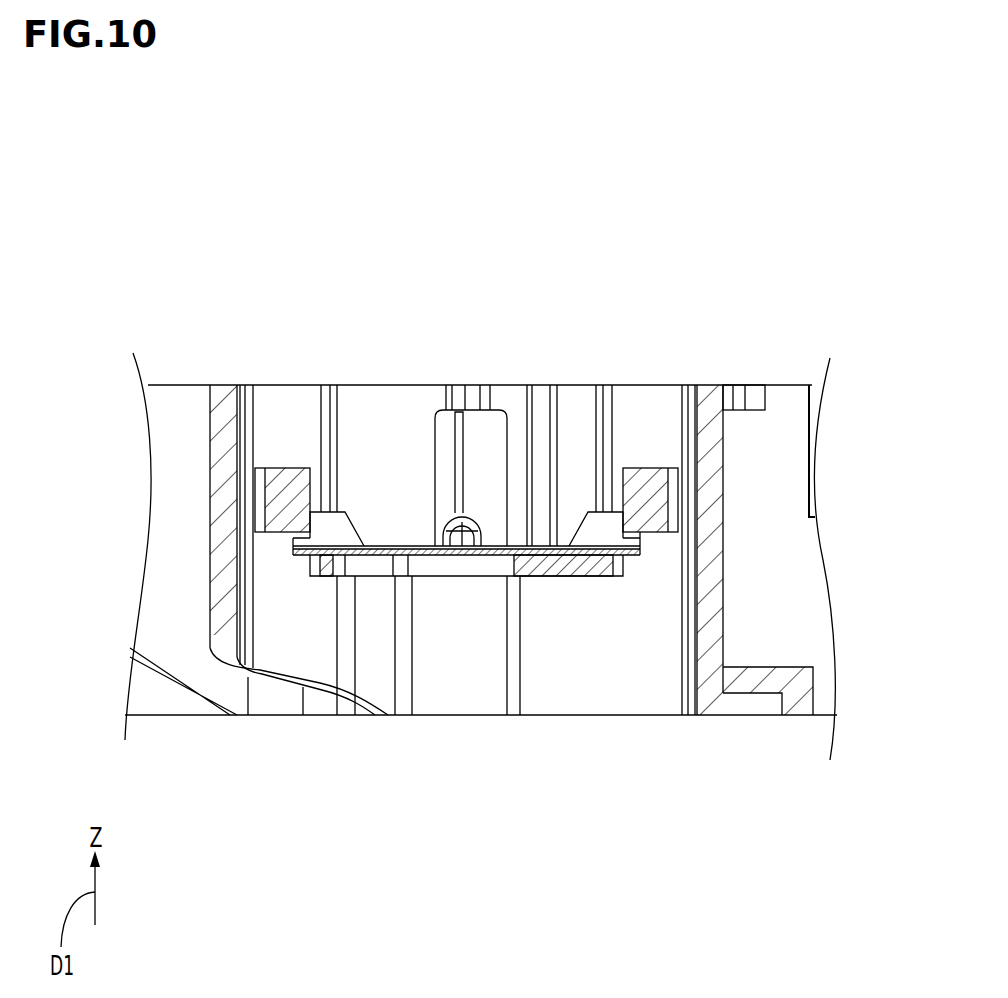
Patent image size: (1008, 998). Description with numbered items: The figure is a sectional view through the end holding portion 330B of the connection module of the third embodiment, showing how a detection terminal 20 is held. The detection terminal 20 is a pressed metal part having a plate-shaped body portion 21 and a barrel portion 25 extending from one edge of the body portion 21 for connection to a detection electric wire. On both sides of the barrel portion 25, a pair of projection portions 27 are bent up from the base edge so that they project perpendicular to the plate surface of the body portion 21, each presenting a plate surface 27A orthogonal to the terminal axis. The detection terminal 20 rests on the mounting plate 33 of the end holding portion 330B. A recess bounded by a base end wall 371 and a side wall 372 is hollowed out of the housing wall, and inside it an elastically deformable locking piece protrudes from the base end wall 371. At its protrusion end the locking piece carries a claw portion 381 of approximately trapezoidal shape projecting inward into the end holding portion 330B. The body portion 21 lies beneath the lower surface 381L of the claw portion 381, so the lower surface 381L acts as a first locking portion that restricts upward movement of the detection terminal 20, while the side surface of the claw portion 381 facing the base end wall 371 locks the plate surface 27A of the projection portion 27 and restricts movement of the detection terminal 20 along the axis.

The end holding portion 330B is at (386, 437).
The barrel portion 25 is at (466, 522).
The plate surface 27A is at (588, 530).
The projection portion 27 is at (603, 441).
The base end wall 371 is at (645, 402).
The side wall 372 is at (708, 407).
The claw portion 381 is at (281, 512).
The lower surface 381L is at (653, 532).
The mounting plate 33 is at (515, 567).
The body portion 21 is at (550, 576).
The detection terminal 20 is at (588, 576).